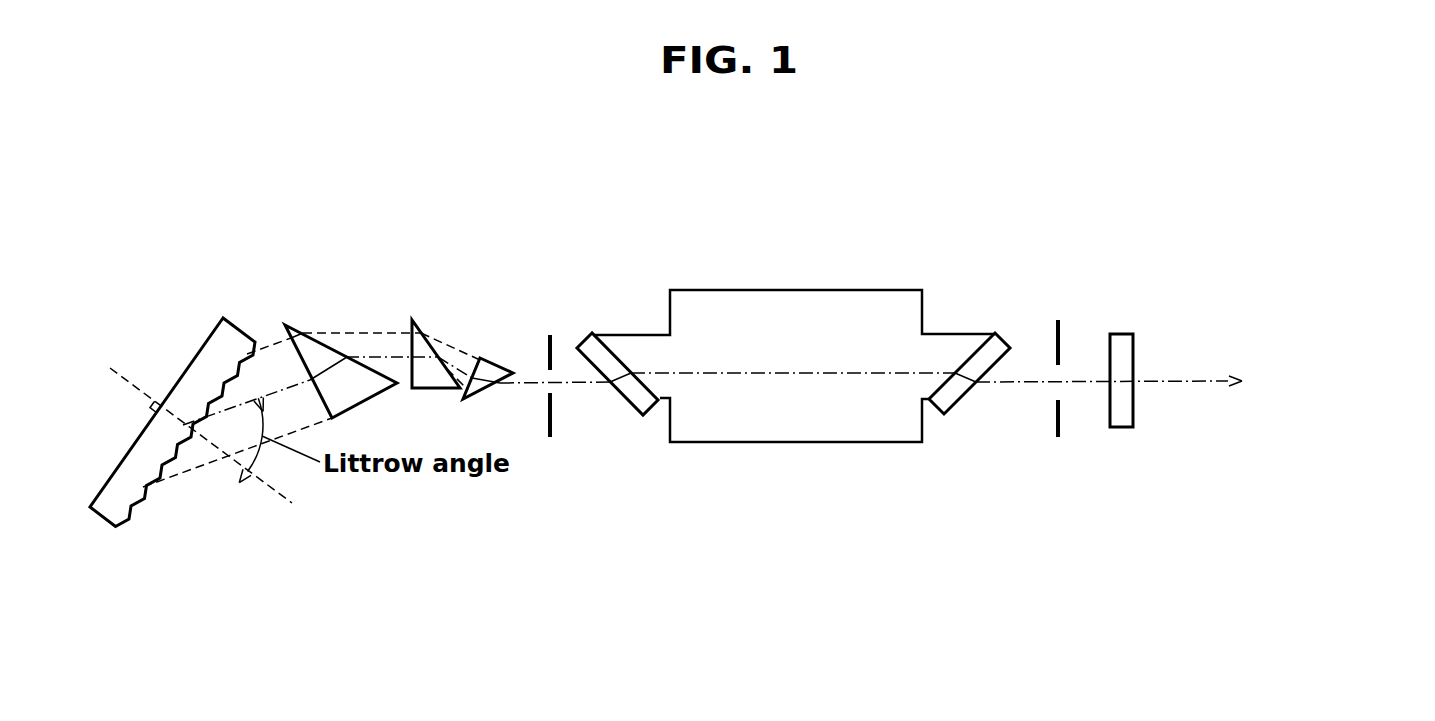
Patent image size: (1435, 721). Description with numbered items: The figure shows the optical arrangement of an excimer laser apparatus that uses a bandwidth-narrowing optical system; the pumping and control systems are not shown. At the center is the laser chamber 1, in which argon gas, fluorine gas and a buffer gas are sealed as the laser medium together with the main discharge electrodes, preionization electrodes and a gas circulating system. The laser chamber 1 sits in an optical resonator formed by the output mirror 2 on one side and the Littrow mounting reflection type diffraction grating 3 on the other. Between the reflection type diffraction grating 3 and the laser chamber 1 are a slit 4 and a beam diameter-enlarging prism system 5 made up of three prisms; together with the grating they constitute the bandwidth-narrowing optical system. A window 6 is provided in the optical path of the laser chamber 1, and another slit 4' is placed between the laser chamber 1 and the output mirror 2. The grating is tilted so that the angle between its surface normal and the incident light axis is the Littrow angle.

The laser chamber 1 is at (785, 288).
The output mirror 2 is at (1137, 331).
The Littrow mounting reflection type diffraction grating 3 is at (101, 522).
The slit 4 is at (605, 349).
The slit 4' is at (1100, 335).
The beam diameter-enlarging prism system 5 is at (510, 300).
The window 6 is at (626, 400).